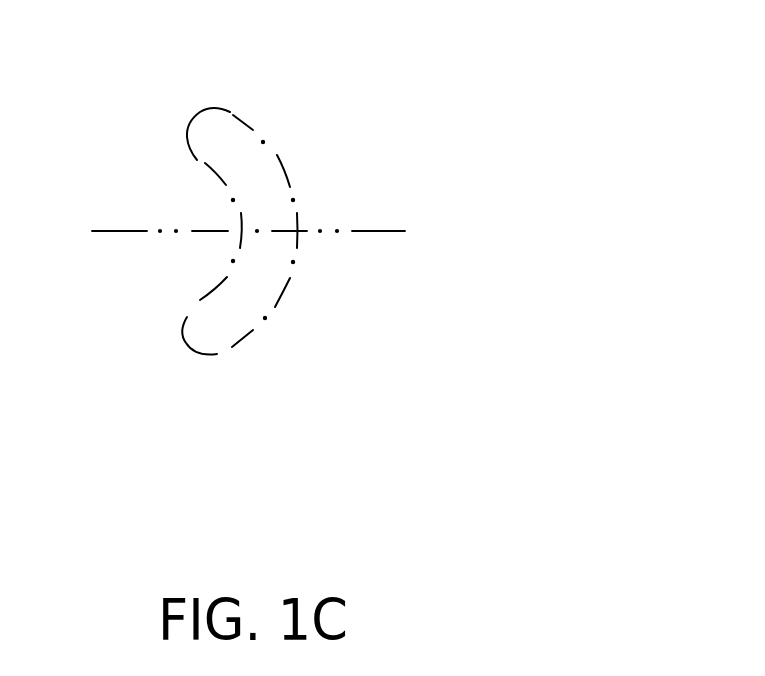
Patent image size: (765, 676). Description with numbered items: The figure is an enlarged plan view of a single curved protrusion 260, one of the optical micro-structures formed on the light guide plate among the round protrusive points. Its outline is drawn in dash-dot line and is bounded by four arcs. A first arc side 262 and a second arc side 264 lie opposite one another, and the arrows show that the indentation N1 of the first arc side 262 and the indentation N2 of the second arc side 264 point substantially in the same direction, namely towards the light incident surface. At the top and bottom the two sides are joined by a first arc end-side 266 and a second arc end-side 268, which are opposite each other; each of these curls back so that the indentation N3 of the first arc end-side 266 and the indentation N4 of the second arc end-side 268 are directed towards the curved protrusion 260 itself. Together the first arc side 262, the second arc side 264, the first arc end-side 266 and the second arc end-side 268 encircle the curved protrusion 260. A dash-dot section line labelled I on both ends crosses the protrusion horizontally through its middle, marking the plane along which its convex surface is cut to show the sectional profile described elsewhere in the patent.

The curved protrusion 260 is at (290, 264).
The first arc side 262 is at (285, 167).
The second arc side 264 is at (238, 213).
The first arc end-side 266 is at (190, 121).
The second arc end-side 268 is at (195, 347).
The indentation of the first arc side N1 is at (283, 251).
The indentation of the second arc side N2 is at (222, 253).
The indentation of the first arc end-side N3 is at (208, 135).
The indentation of the second arc end-side N4 is at (218, 317).
The section line I- I is at (248, 232).